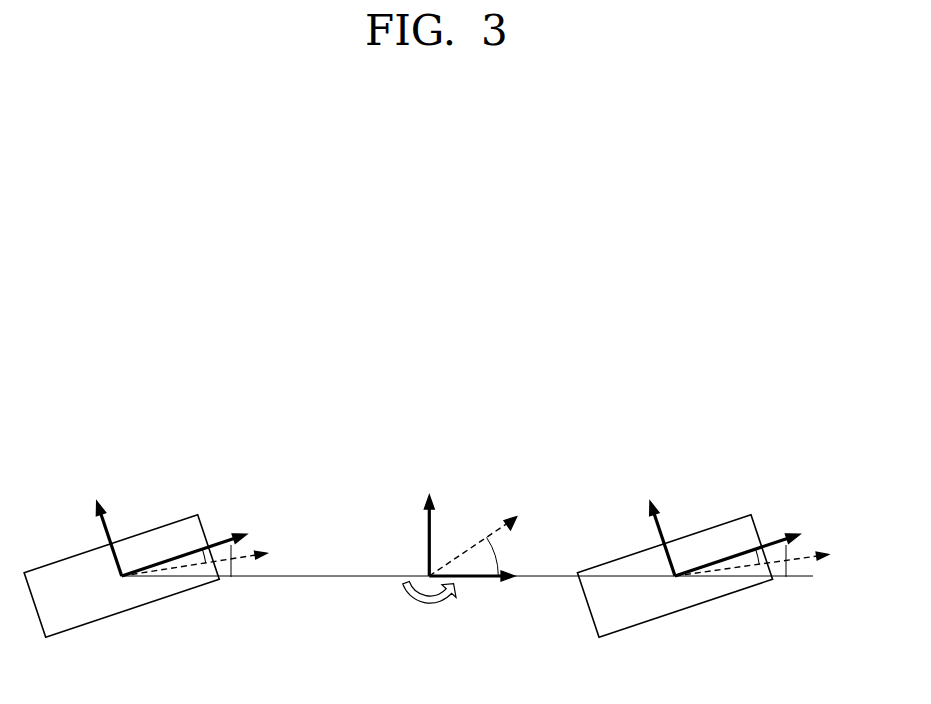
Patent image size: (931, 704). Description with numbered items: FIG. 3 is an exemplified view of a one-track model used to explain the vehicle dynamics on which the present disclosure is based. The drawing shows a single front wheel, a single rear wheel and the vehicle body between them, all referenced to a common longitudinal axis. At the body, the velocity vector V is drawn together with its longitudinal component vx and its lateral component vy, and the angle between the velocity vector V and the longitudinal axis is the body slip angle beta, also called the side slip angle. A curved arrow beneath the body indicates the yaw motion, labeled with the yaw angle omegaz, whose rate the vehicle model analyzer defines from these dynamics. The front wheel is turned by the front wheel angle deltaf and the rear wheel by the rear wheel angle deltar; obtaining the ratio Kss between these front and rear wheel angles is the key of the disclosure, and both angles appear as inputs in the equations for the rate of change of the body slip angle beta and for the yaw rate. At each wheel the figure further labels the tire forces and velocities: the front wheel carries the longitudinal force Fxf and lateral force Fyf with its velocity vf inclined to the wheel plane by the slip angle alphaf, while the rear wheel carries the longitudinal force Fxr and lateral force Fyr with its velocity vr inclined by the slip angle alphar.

The rear tire longitudinal force Fxr is at (184, 554).
The rear tire lateral force Fyr is at (109, 538).
The rear wheel velocity vr is at (194, 564).
The rear tire slip angle alphar is at (204, 556).
The rear wheel angle deltar is at (225, 576).
The front tire longitudinal force Fxf is at (737, 554).
The front tire lateral force Fyf is at (662, 538).
The front wheel velocity vf is at (751, 564).
The front tire slip angle alphaf is at (757, 556).
The front wheel angle deltaf is at (780, 576).
The longitudinal vehicle velocity vx is at (472, 591).
The lateral vehicle velocity vy is at (418, 535).
The vehicle velocity V is at (472, 535).
The body slip angle beta is at (507, 556).
The yaw angle omegaz is at (429, 613).